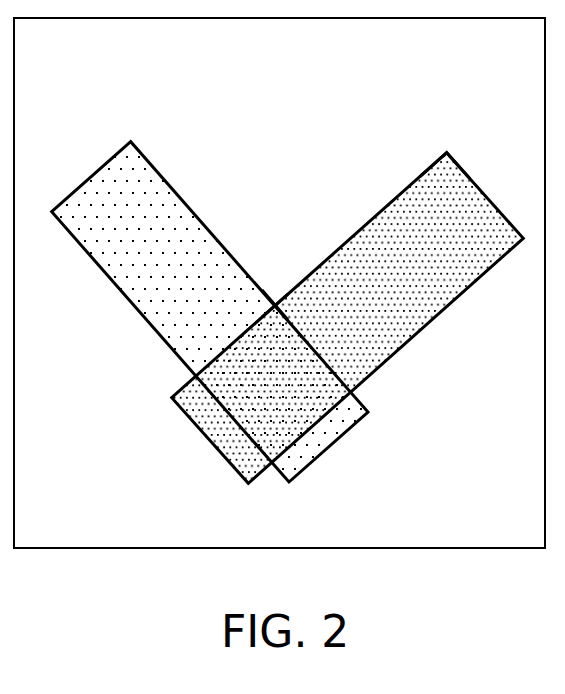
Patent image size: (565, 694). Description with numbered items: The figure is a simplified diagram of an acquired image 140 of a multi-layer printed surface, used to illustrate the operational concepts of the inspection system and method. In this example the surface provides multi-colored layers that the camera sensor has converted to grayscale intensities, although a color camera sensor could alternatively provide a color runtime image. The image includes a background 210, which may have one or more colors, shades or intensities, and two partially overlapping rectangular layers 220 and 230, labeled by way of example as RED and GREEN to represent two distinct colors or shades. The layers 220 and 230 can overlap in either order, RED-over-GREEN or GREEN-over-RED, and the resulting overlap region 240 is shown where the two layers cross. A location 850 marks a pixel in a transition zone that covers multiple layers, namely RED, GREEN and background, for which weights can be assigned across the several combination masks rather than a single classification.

The acquired image 140 is at (440, 142).
The background 210 is at (504, 368).
The layer 220 is at (178, 210).
The layer 230 is at (363, 223).
The overlap region 240 is at (306, 403).
The location 850 is at (275, 307).